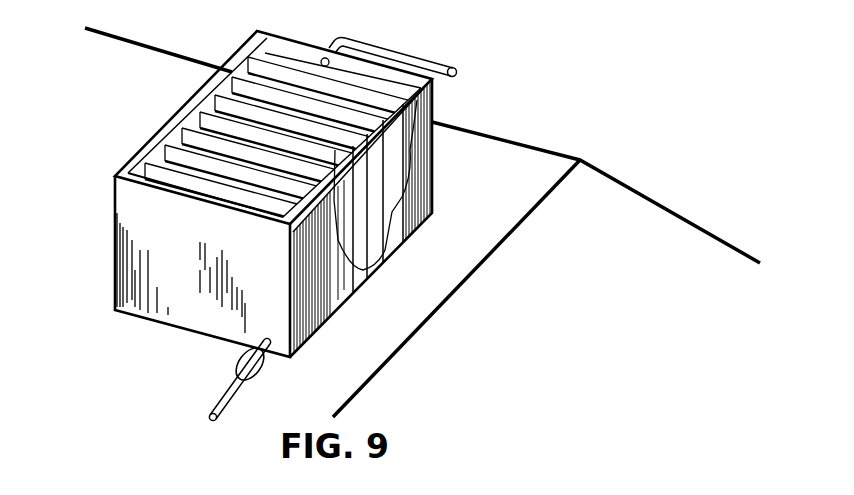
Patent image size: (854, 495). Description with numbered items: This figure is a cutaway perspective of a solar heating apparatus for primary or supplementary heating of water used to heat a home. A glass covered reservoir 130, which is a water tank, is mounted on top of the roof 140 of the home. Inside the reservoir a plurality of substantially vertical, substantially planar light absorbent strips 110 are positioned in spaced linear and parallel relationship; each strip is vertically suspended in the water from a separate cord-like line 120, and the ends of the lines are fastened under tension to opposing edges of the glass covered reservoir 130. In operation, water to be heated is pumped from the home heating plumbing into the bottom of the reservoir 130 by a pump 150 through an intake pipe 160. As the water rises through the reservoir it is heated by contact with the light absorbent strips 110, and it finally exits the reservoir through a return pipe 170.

The light absorbent strips 110 is at (378, 190).
The cord-like lines 120 is at (132, 160).
The glass covered reservoir 130 is at (433, 165).
The roof 140 is at (514, 141).
The pump 150 is at (260, 377).
The intake pipe 160 is at (223, 392).
The return pipe 170 is at (405, 53).